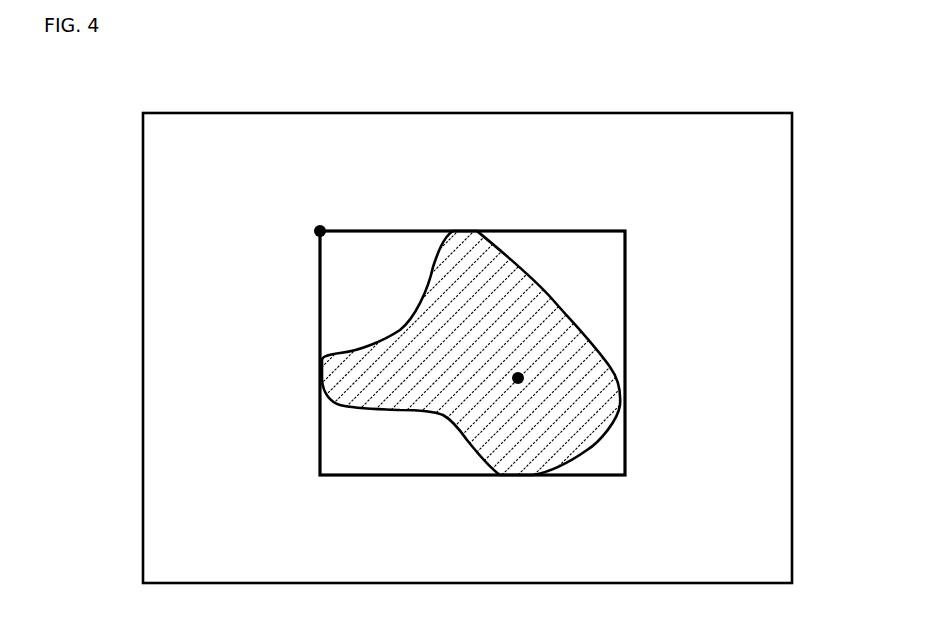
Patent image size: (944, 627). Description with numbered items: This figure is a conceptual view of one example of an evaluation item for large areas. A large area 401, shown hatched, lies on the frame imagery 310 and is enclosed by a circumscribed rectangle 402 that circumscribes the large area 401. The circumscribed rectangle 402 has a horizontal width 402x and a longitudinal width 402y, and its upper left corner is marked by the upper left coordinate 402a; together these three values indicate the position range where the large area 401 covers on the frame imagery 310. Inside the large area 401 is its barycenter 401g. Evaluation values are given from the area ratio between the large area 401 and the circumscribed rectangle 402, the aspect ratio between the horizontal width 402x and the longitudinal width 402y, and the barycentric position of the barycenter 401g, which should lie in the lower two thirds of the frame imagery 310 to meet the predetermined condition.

The frame imagery 310 is at (792, 172).
The circumscribed rectangle 402 is at (606, 229).
The upper left coordinate 402a is at (320, 231).
The horizontal width 402x is at (320, 484).
The longitudinal width 402y is at (318, 475).
The large area 401 is at (545, 297).
The barycenter 401g is at (518, 378).